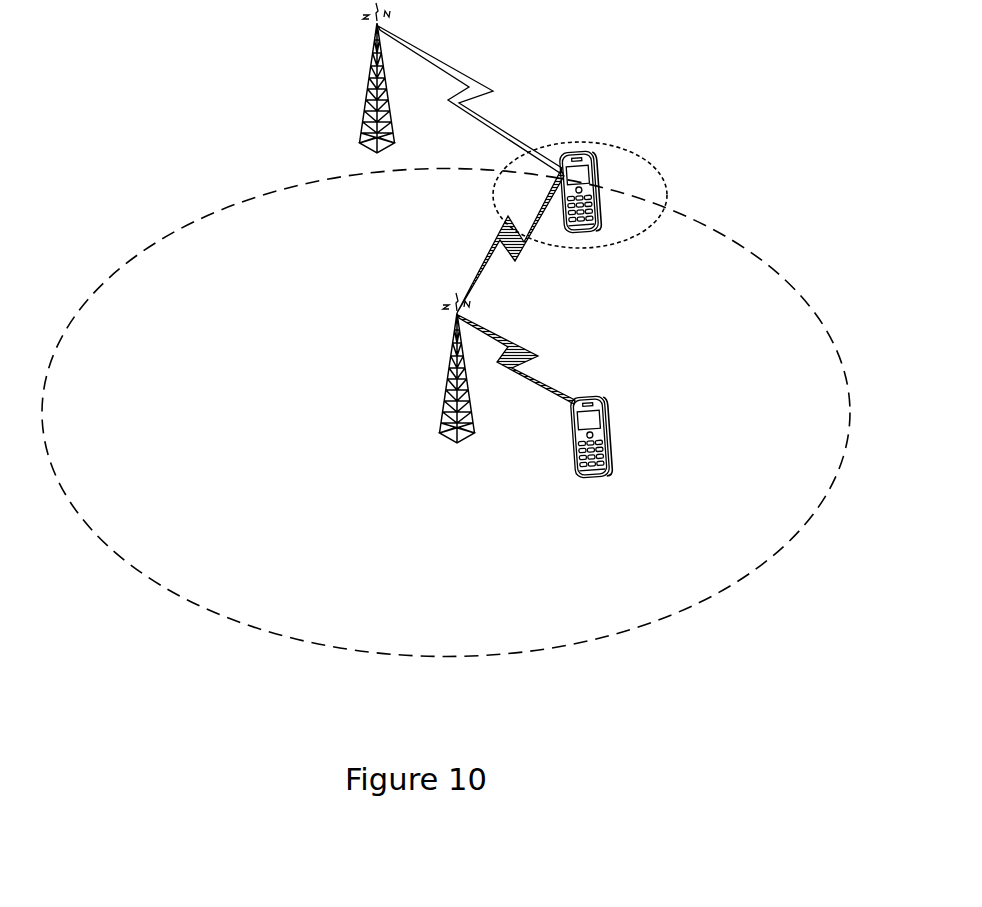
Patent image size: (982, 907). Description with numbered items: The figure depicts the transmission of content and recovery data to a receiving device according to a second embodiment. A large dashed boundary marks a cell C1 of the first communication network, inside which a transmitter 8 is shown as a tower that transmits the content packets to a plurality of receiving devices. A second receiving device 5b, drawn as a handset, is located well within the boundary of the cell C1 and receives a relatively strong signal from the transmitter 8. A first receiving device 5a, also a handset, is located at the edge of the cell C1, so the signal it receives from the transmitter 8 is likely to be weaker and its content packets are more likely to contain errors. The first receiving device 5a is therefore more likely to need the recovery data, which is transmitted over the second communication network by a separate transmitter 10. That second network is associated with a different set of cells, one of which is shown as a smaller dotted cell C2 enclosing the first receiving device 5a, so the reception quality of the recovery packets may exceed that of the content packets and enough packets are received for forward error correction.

The cell C1 is at (188, 203).
The cell C2 is at (597, 133).
The transmitter 10 is at (349, 112).
The transmitter 8 is at (425, 405).
The first receiving device 5a is at (607, 170).
The second receiving device 5b is at (615, 440).